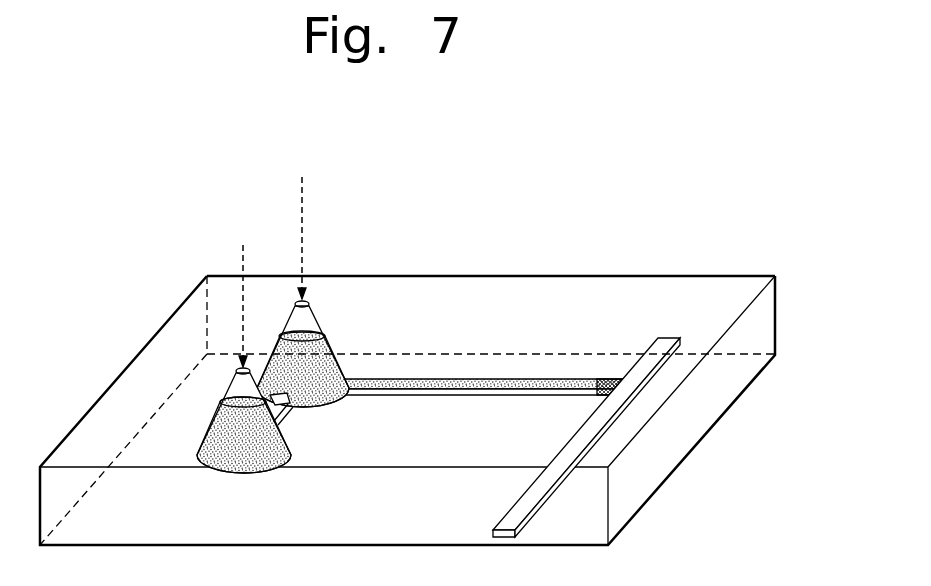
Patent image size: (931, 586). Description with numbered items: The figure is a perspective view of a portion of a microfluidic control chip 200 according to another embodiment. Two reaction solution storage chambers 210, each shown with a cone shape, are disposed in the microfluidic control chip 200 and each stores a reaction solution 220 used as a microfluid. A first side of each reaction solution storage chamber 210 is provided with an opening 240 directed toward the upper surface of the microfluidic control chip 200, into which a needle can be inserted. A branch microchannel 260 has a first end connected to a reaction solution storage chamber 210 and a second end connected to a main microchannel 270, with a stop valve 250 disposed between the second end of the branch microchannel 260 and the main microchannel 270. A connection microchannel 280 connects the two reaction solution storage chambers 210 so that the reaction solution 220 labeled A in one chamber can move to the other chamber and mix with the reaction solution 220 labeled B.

The microfluidic control chip 200 is at (678, 276).
The reaction solution storage chamber 210 is at (203, 441).
The reaction solution 220 is at (221, 452).
The opening 240 is at (242, 363).
The stop valve 250 is at (610, 381).
The branch microchannel 260 is at (503, 384).
The main microchannel 270 is at (650, 361).
The connection microchannel 280 is at (290, 404).